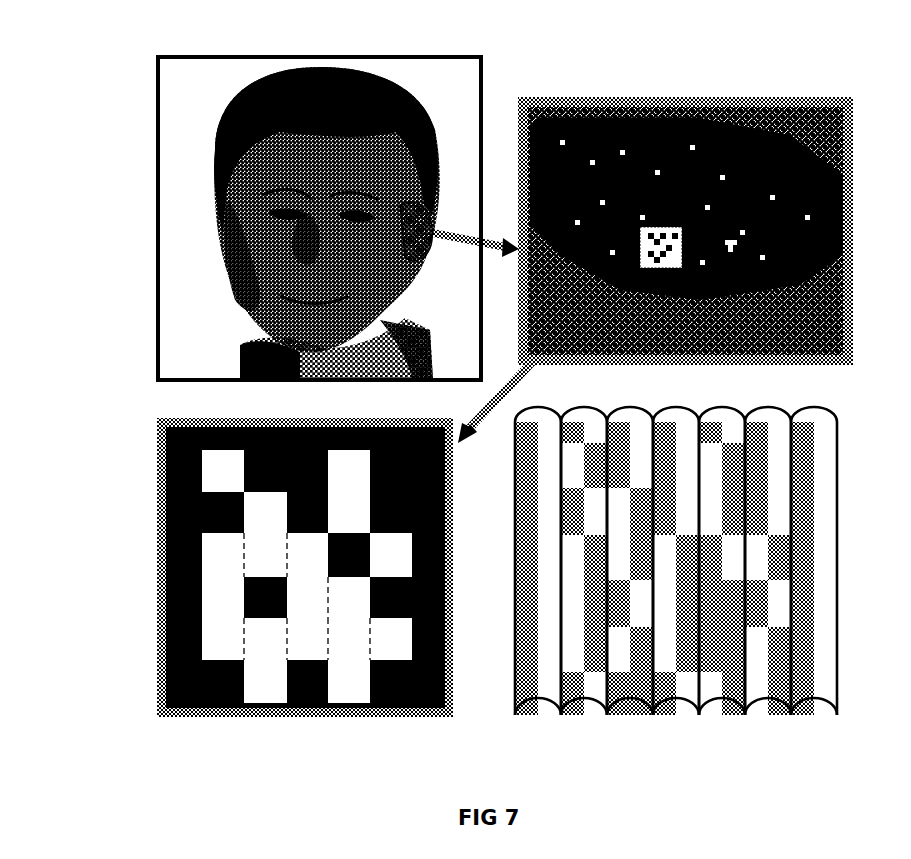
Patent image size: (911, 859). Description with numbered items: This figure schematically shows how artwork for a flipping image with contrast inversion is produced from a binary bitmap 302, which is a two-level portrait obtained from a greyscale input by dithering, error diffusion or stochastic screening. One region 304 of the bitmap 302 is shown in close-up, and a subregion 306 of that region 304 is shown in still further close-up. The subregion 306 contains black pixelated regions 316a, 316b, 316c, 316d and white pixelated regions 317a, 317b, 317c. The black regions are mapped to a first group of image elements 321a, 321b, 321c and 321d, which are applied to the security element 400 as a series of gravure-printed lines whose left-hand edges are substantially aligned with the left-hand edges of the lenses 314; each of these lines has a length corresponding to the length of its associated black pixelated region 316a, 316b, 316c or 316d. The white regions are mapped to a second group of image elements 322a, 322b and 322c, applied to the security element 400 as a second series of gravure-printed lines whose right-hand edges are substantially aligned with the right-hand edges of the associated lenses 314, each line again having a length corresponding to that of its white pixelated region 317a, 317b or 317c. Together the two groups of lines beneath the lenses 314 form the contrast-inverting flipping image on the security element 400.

The binary bitmap 302 is at (238, 56).
The region of the bitmap 304 is at (326, 196).
The subregion 306 is at (655, 227).
The lenses 314 is at (763, 410).
The black pixelated region 316a is at (183, 629).
The black pixelated region 316b is at (223, 492).
The black pixelated region 316c is at (223, 662).
The black pixelated region 316d is at (307, 668).
The white pixelated region 317a is at (223, 561).
The white pixelated region 317b is at (264, 668).
The white pixelated region 317c is at (307, 640).
The image element 321a is at (530, 712).
The image element 321b is at (572, 490).
The image element 321c is at (576, 715).
The image element 321d is at (667, 717).
The image element 322a is at (597, 675).
The image element 322b is at (640, 716).
The image element 322c is at (685, 717).
The security element 400 is at (846, 724).